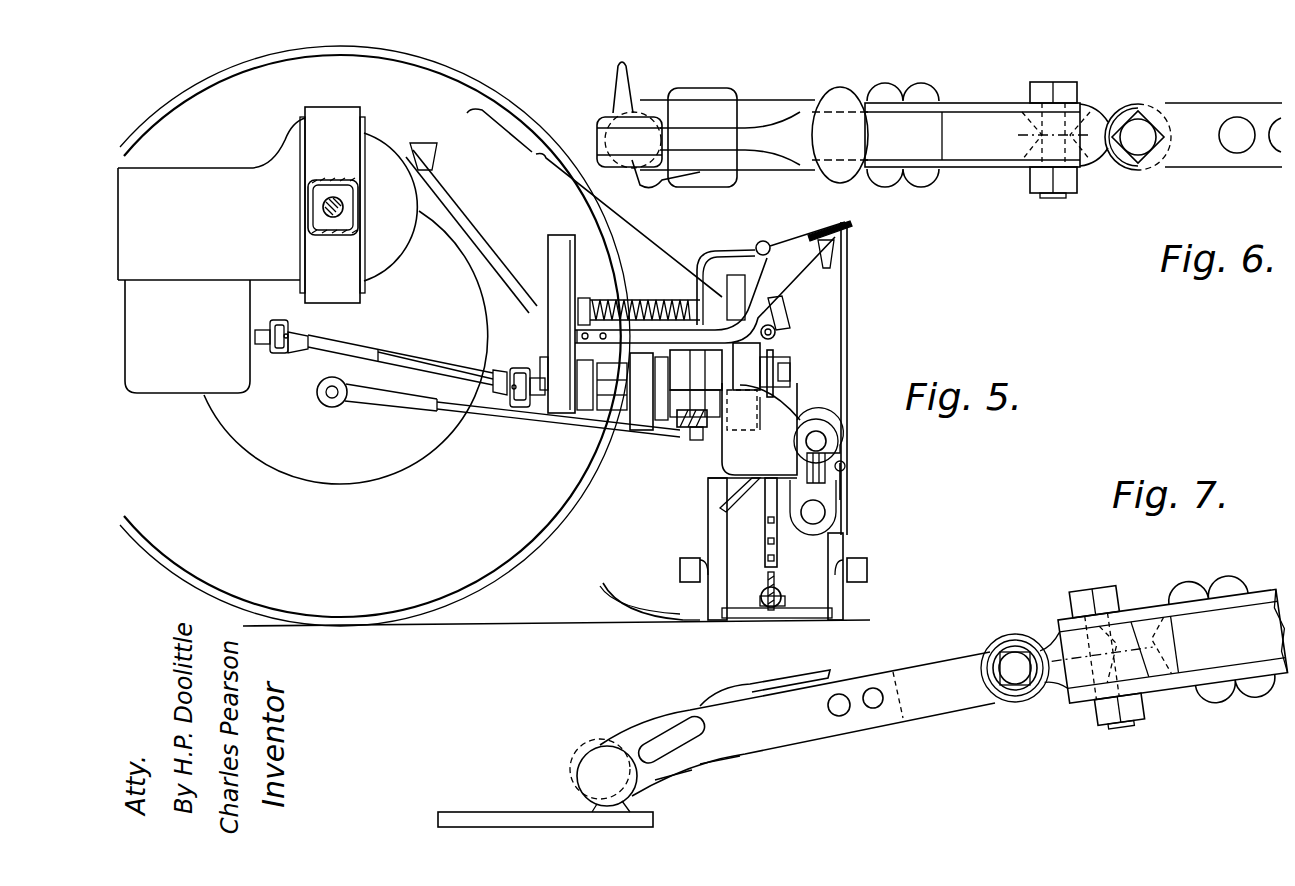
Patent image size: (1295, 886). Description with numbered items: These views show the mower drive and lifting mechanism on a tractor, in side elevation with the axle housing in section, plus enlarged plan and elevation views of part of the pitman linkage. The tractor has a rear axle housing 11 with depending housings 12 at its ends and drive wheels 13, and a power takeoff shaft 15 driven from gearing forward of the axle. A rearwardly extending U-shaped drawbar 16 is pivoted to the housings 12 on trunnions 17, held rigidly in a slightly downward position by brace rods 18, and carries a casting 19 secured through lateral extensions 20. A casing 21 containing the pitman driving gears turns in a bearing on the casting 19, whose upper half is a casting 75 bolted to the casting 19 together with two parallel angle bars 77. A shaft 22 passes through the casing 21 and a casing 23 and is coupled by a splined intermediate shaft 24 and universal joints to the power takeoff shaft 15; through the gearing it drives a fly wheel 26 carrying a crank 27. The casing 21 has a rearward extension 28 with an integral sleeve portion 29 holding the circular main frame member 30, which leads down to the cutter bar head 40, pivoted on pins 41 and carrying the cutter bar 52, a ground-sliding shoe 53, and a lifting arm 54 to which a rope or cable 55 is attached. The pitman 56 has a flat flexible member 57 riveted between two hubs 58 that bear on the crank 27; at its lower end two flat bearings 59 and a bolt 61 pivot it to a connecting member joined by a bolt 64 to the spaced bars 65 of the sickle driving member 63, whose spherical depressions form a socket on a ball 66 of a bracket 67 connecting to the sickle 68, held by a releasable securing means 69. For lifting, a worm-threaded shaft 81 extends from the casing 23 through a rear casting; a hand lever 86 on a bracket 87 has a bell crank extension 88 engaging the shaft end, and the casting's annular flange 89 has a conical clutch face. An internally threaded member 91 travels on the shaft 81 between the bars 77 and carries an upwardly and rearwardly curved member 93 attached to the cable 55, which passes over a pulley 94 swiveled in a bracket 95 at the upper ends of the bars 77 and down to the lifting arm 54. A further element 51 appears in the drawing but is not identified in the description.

In FIG. 5, the rear axle housing 11 is at (330, 180).
In FIG. 5, the depending housings 12 is at (245, 440).
In FIG. 5, the drive wheels 13 is at (532, 548).
In FIG. 5, the power takeoff shaft 15 is at (272, 355).
In FIG. 5, the U-shaped drawbar 16 is at (476, 412).
In FIG. 5, the trunnions 17 is at (330, 400).
In FIG. 5, the brace rods 18 is at (478, 252).
In FIG. 5, the casting 19 is at (170, 385).
In FIG. 5, the lateral extensions 20 is at (686, 430).
In FIG. 5, the casing 21 is at (638, 420).
In FIG. 5, the shaft 22 is at (520, 410).
In FIG. 5, the casing 23 is at (560, 418).
In FIG. 5, the splined intermediate shaft 24 is at (420, 362).
In FIG. 5, the fly wheel 26 is at (762, 355).
In FIG. 5, the crank 27 is at (792, 370).
In FIG. 5, the rearward extension 28 is at (722, 474).
In FIG. 5, the sleeve portion 29 is at (836, 432).
In FIG. 5, the main frame member 30 is at (817, 441).
In FIG. 5, the cutter bar head 40 is at (680, 618).
In FIG. 5, the pins 41 is at (680, 566).
In FIG. 5, the roller 51 is at (828, 522).
In FIG. 5, the cutter bar 52 is at (845, 545).
In FIG. 5, the shoe 53 is at (612, 578).
In FIG. 5, the lifting arm 54 is at (843, 482).
In FIG. 5, the rope or cable 55 is at (848, 333).
In FIG. 5, the pitman 56 is at (764, 495).
In FIG. 6, the pitman 56 is at (1205, 168).
In FIG. 7, the pitman 56 is at (1214, 596).
In FIG. 5, the flat flexible member 57 is at (762, 400).
In FIG. 5, the hubs 58 is at (775, 380).
In FIG. 5, the flat bearings 59 is at (708, 515).
In FIG. 6, the flat bearings 59 is at (1170, 160).
In FIG. 7, the flat bearings 59 is at (1135, 612).
In FIG. 6, the bolt 61 is at (1142, 128).
In FIG. 7, the bolt 61 is at (1098, 596).
In FIG. 6, the sickle driving member 63 is at (902, 100).
In FIG. 7, the sickle driving member 63 is at (892, 718).
In FIG. 6, the bolt 64 is at (1068, 90).
In FIG. 7, the bolt 64 is at (1016, 660).
In FIG. 5, the spaced bars 65 is at (782, 596).
In FIG. 6, the spaced bars 65 is at (985, 105).
In FIG. 7, the spaced bars 65 is at (915, 672).
In FIG. 6, the ball 66 is at (605, 138).
In FIG. 7, the ball 66 is at (582, 762).
In FIG. 5, the bracket 67 is at (770, 610).
In FIG. 7, the bracket 67 is at (590, 808).
In FIG. 7, the sickle 68 is at (486, 814).
In FIG. 7, the releasable securing means 69 is at (760, 688).
In FIG. 5, the casting 75 is at (682, 330).
In FIG. 5, the angle bars 77 is at (604, 300).
In FIG. 5, the shaft 81 is at (634, 298).
In FIG. 5, the hand lever 86 is at (652, 248).
In FIG. 5, the bracket 87 is at (776, 330).
In FIG. 5, the bell crank extension 88 is at (784, 320).
In FIG. 5, the annular flange 89 is at (740, 272).
In FIG. 5, the internally threaded member 91 is at (699, 268).
In FIG. 5, the upwardly and rearwardly curved member 93 is at (715, 252).
In FIG. 5, the pulley 94 is at (845, 222).
In FIG. 5, the bracket 95 is at (828, 268).